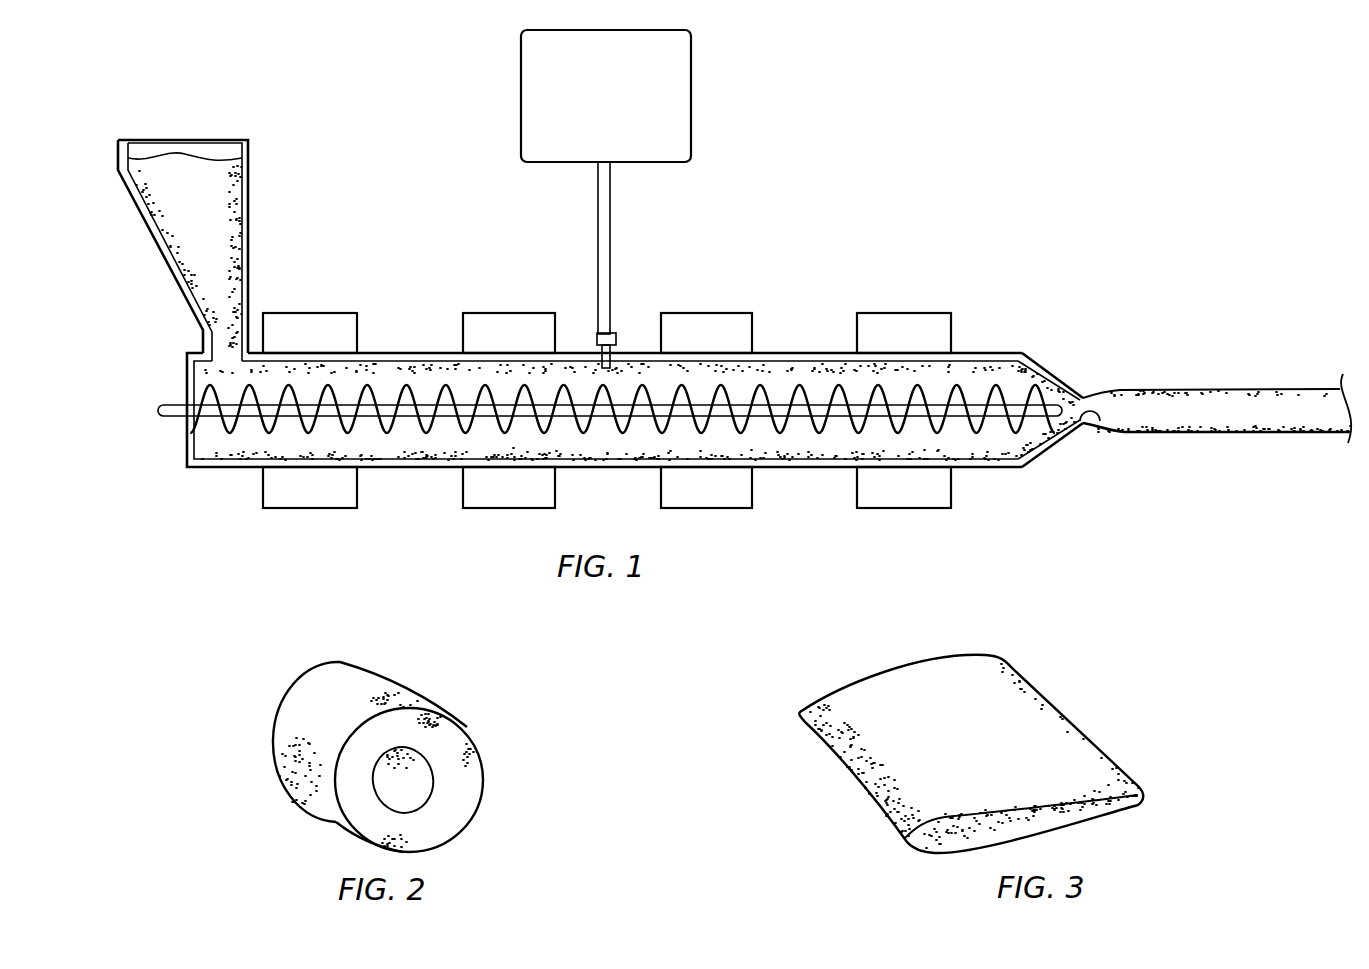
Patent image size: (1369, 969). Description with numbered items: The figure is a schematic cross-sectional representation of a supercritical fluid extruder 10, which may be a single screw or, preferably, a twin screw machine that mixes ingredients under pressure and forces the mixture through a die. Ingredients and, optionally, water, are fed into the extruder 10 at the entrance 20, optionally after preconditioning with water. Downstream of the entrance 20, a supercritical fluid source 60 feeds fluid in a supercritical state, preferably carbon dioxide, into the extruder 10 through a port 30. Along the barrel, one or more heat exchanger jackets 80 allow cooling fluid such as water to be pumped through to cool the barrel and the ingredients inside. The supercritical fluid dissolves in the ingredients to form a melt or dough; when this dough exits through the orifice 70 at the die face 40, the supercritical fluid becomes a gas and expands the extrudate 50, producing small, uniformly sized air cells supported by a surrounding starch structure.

The extruder 10 is at (968, 135).
The entrance 20 is at (161, 140).
The port 30 is at (596, 340).
The die face 40 is at (1082, 380).
The extrudate 50 is at (1255, 390).
The supercritical fluid source 60 is at (617, 107).
The orifice 70 is at (1094, 430).
The heat exchanger jackets 80 is at (505, 508).